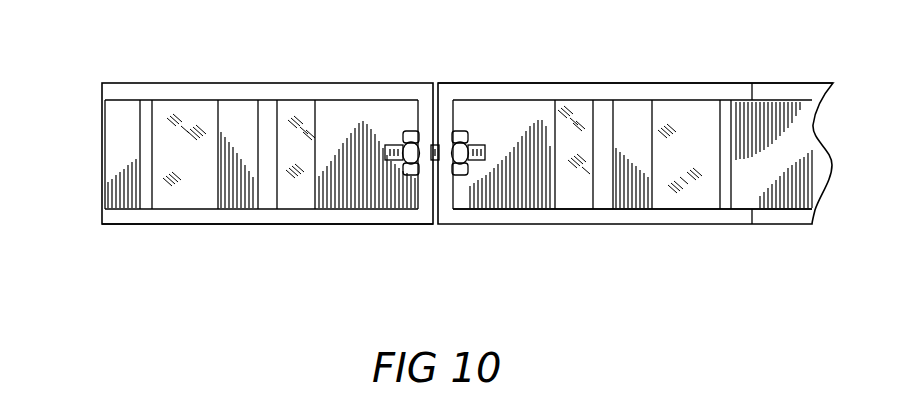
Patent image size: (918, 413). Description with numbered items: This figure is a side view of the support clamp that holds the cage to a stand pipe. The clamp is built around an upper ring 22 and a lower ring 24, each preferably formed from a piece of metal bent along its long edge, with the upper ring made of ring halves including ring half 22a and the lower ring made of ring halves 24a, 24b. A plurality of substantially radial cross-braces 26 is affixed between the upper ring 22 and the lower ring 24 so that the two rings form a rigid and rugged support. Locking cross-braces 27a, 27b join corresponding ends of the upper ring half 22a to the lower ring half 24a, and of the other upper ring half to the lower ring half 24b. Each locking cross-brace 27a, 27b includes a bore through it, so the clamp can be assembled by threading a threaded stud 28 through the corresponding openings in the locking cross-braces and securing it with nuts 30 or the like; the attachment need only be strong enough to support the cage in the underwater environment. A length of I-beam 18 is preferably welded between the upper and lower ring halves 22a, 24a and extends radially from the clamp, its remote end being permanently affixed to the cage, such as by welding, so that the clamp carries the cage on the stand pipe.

The I-beam 18 is at (815, 178).
The upper ring 22 is at (97, 90).
The ring half 22a is at (238, 83).
The lower ring 24 is at (97, 215).
The ring half 24a is at (185, 226).
The ring half 24b is at (662, 224).
The cross-brace 26 is at (700, 115).
The locking cross-brace 27a is at (418, 116).
The locking cross-brace 27b is at (452, 194).
The threaded stud 28 is at (483, 143).
The nut 30 is at (413, 175).